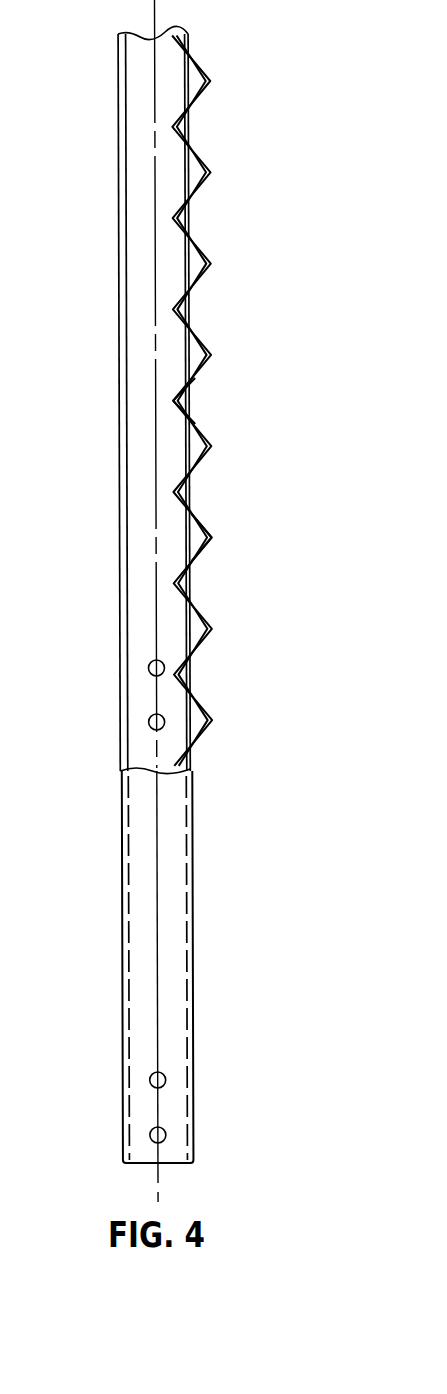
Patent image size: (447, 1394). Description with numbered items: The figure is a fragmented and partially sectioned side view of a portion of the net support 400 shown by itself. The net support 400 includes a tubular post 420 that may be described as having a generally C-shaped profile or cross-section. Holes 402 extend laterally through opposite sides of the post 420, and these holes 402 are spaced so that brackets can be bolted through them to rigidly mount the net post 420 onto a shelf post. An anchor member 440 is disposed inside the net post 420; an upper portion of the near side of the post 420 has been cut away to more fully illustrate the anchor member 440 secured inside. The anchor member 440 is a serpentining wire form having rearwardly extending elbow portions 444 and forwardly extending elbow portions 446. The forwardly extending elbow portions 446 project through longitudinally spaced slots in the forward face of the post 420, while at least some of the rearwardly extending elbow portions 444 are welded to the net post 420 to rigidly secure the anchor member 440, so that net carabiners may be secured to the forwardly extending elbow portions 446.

The net support 400 is at (216, 601).
The holes 402 is at (150, 722).
The tubular post 420 is at (130, 970).
The anchor member 440 is at (222, 438).
The rearwardly extending elbow portions 444 is at (173, 401).
The forwardly extending elbow portions 446 is at (213, 534).